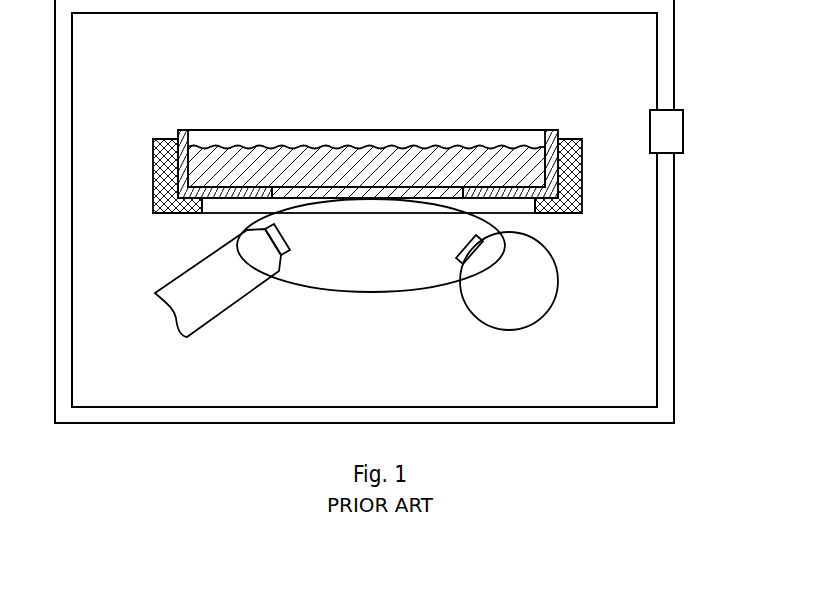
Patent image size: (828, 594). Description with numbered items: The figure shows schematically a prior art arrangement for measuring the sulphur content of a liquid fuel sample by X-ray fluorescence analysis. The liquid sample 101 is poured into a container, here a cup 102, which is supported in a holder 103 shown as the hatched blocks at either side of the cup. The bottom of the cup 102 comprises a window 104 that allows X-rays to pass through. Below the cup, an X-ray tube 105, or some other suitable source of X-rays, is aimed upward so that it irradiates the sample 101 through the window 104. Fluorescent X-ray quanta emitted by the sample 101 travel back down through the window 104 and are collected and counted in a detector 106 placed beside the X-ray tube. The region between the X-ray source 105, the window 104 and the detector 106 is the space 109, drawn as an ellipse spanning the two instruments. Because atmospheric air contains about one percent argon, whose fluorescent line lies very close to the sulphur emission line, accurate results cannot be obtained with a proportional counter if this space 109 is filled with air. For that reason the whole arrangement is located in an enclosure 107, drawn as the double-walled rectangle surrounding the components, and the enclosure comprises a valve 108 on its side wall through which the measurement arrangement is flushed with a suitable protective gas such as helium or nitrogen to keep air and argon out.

The sample 101 is at (478, 157).
The cup 102 is at (180, 130).
The holder 103 is at (572, 138).
The window 104 is at (353, 192).
The X-ray tube 105 is at (237, 297).
The detector 106 is at (460, 296).
The enclosure 107 is at (668, 243).
The valve 108 is at (678, 138).
The space 109 is at (365, 294).